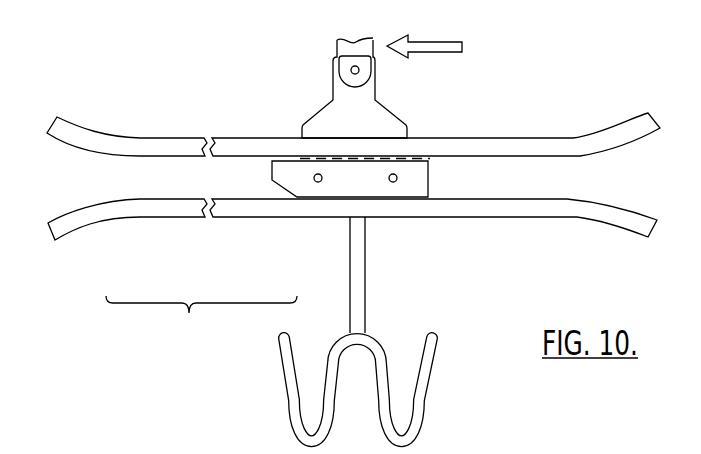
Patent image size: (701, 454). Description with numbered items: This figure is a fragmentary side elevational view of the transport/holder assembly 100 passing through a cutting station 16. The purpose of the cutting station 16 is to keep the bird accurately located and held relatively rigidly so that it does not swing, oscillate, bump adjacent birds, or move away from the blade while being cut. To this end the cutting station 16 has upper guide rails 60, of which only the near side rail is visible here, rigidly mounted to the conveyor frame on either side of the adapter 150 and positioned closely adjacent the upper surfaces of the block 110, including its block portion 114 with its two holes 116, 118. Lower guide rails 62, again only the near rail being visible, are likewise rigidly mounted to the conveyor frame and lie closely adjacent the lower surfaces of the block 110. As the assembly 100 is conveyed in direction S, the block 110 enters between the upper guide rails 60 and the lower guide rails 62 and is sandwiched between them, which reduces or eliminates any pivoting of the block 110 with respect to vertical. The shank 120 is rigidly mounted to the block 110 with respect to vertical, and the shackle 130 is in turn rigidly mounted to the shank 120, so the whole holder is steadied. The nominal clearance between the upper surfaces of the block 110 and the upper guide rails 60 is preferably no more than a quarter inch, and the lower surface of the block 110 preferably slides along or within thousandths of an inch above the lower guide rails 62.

The transport/holder assembly 100 is at (295, 92).
The cutting station 16 is at (482, 115).
The upper guide rails 60 is at (603, 135).
The lower guide rails 62 is at (580, 213).
The block 110 is at (253, 182).
The block portion 114 is at (342, 187).
The first hole 116 is at (315, 180).
The second hole 118 is at (398, 176).
The shank 120 is at (363, 262).
The shackle 130 is at (428, 390).
The adapter 150 is at (365, 106).